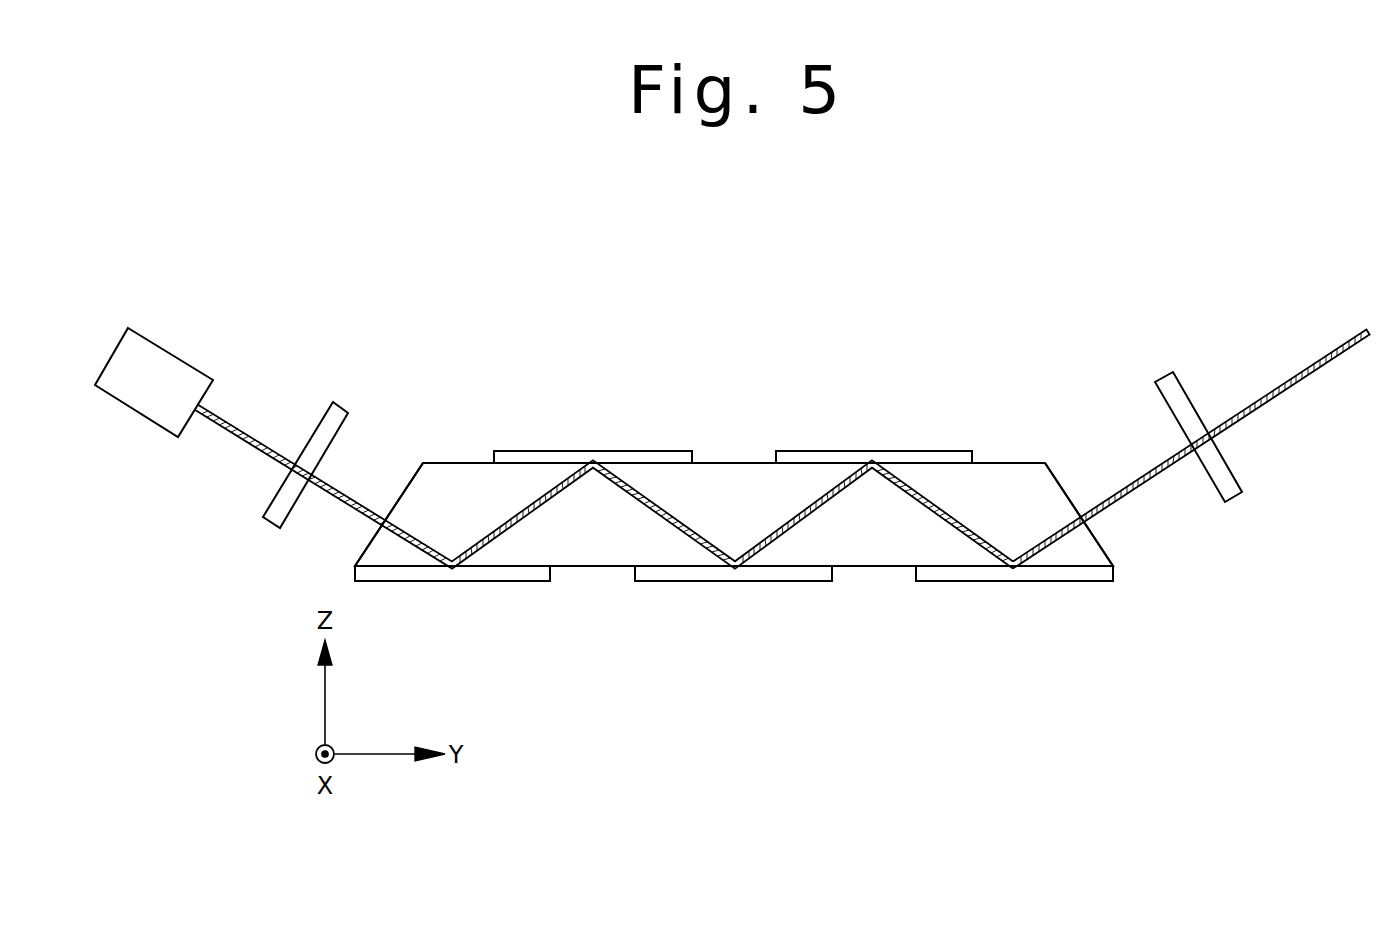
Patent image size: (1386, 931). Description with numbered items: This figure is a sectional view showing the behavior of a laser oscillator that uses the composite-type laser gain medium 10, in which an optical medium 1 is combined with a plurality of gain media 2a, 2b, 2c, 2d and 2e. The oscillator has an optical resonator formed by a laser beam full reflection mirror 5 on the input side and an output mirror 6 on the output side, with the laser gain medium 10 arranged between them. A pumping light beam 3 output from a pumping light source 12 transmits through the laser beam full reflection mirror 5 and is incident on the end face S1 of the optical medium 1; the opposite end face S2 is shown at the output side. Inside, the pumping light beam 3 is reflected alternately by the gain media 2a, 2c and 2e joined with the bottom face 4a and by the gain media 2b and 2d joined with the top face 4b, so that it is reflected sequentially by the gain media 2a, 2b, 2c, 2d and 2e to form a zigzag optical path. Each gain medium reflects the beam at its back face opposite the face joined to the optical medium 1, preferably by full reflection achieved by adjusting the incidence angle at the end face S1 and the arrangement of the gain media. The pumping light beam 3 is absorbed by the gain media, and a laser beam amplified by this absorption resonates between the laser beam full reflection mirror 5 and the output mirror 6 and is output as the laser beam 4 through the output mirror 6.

The optical medium 1 is at (776, 519).
The gain medium 2a is at (450, 582).
The gain medium 2b is at (590, 462).
The gain medium 2c is at (732, 582).
The gain medium 2d is at (878, 460).
The gain medium 2e is at (1010, 582).
The pumping light beam 3 is at (255, 435).
The laser beam 4 is at (1288, 377).
The bottom face 4a is at (598, 567).
The top face 4b is at (460, 462).
The laser beam full reflection mirror 5 is at (273, 517).
The output mirror 6 is at (1235, 470).
The laser gain medium 10 is at (776, 498).
The pumping light source 12 is at (166, 358).
The end face S1 is at (408, 488).
The emission end face S2 is at (1103, 543).